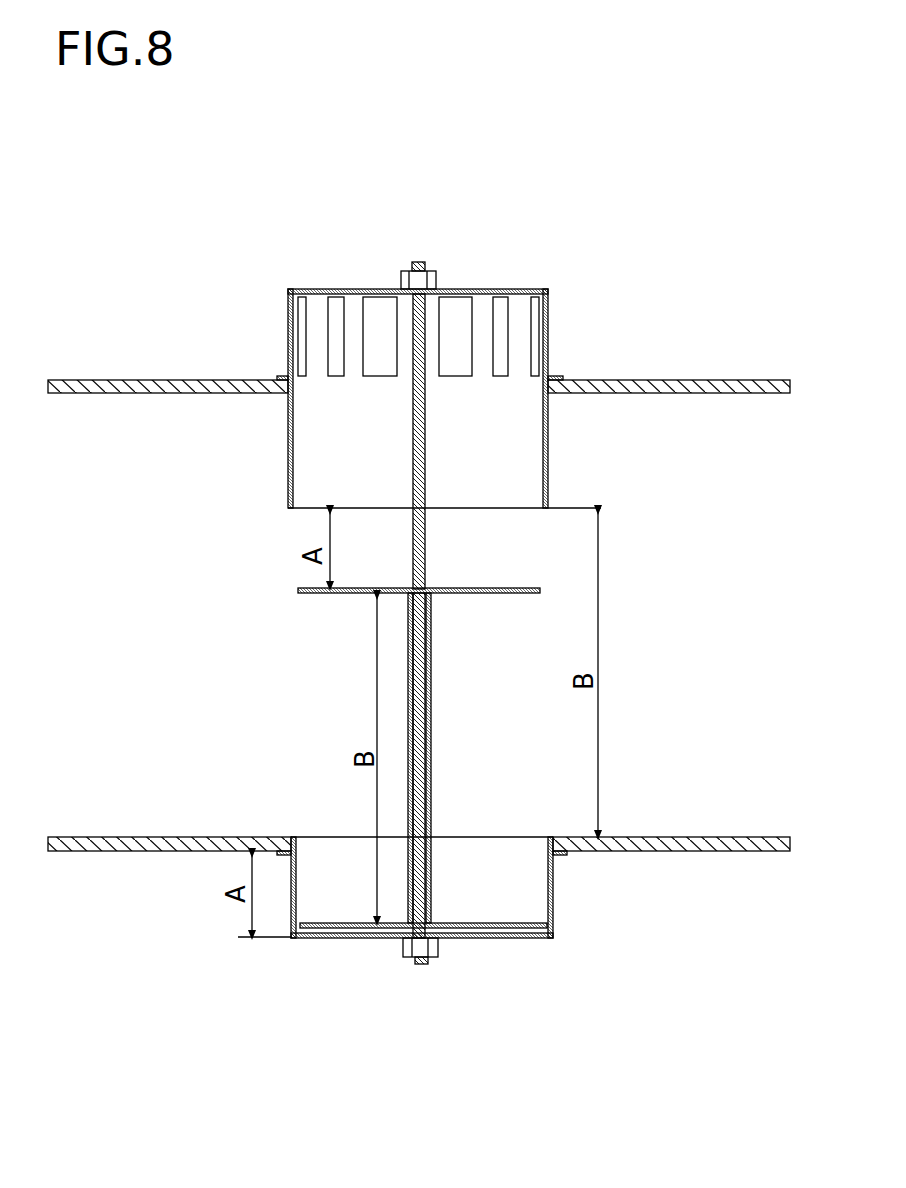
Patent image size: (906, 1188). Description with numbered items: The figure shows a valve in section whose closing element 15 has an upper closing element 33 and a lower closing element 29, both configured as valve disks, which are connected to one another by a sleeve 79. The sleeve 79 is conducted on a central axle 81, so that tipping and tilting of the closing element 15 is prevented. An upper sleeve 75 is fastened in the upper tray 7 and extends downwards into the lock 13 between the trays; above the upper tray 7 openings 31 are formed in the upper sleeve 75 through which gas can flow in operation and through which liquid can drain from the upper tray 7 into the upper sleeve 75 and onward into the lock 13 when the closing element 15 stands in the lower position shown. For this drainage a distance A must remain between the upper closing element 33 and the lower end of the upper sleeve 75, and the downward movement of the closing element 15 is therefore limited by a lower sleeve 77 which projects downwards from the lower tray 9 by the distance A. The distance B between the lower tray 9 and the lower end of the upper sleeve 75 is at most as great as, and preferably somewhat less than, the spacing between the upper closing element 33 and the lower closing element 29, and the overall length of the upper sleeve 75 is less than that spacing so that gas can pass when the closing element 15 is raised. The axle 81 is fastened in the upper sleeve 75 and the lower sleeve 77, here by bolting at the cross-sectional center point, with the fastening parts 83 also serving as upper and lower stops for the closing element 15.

The upper tray 7 is at (673, 386).
The lower tray 9 is at (660, 843).
The lock 13 is at (673, 665).
The closing element 15 is at (446, 670).
The lower closing element 29 is at (338, 928).
The openings 31 is at (337, 313).
The upper closing element 33 is at (487, 588).
The upper sleeve 75 is at (548, 318).
The lower sleeve 77 is at (553, 899).
The sleeve 79 is at (432, 733).
The axle 81 is at (425, 533).
The nut 83 is at (473, 291).